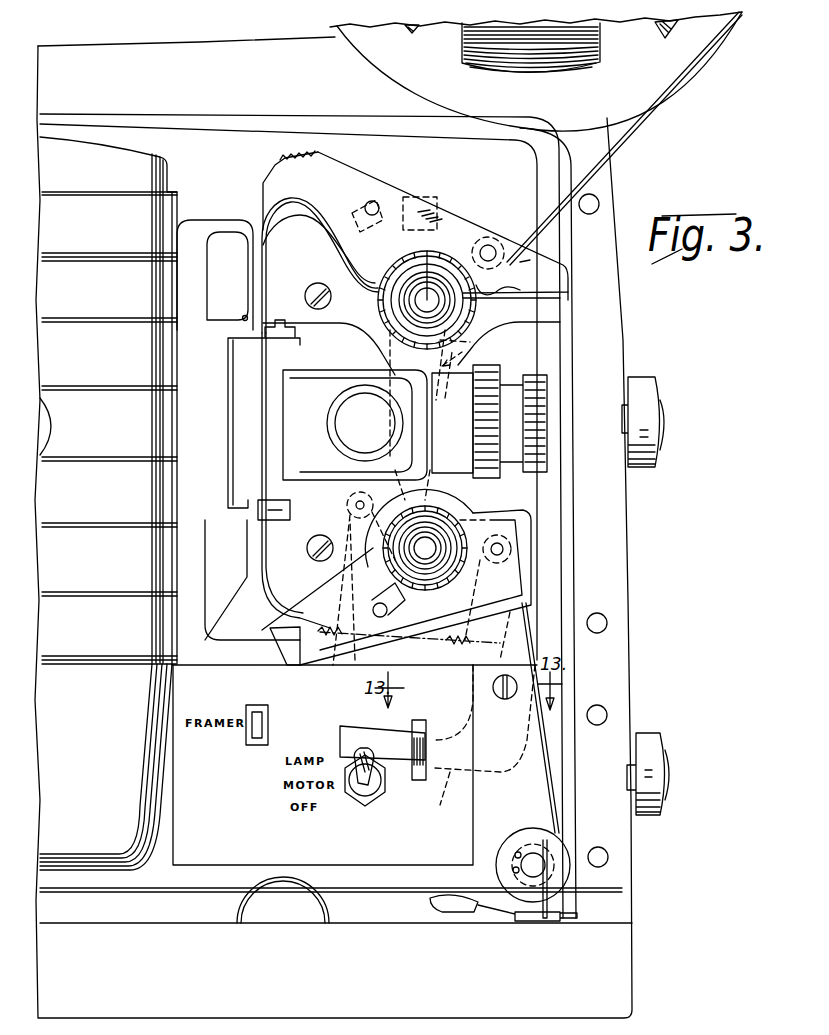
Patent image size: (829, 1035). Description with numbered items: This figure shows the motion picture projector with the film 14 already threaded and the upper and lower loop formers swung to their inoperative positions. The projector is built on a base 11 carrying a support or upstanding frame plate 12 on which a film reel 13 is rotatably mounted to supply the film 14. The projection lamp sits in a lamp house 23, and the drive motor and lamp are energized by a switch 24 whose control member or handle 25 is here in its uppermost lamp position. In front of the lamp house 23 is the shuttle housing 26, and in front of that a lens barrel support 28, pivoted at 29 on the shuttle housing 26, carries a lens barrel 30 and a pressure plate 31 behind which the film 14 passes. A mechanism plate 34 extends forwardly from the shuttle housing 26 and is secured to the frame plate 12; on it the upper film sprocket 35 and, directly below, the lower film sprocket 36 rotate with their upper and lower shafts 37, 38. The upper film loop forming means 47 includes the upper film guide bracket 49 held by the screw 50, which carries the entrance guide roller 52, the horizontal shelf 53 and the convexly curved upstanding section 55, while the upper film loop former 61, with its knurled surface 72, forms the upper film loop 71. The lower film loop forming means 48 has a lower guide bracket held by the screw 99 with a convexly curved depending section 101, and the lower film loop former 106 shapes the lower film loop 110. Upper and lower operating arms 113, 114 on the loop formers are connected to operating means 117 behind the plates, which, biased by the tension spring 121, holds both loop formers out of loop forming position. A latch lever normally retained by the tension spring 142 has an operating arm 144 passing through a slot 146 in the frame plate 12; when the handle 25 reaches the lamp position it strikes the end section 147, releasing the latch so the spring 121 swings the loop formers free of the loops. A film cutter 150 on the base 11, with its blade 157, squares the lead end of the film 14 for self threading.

The base 11 is at (618, 968).
The support or upstanding frame plate 12 is at (607, 325).
The film reel 13 is at (690, 55).
The film 14 is at (636, 128).
The lamp house 23 is at (103, 147).
The switch 24 is at (390, 800).
The control member or handle 25 is at (358, 788).
The shuttle housing 26 is at (222, 225).
The lens barrel support 28 is at (318, 418).
The pivot 29 is at (244, 314).
The lens barrel 30 is at (468, 430).
The pressure plate 31 is at (270, 326).
The mechanism plate 34 is at (483, 195).
The upper film sprocket 35 is at (463, 308).
The lower film sprocket 36 is at (426, 578).
The upper shaft 37 is at (424, 284).
The lower shaft 38 is at (428, 545).
The upper film loop forming means 47 is at (571, 287).
The lower film loop forming means 48 is at (540, 550).
The upper film guide bracket 49 is at (367, 342).
The screw 50 is at (312, 285).
The entrance guide roller 52 is at (488, 243).
The shelf 53 is at (536, 266).
The convexly curved upstanding section 55 is at (290, 236).
The upper film loop former 61 is at (357, 182).
The upper film loop 71 is at (262, 212).
The knurled surface 72 is at (280, 162).
The screw 99 is at (307, 549).
The convexly curved depending section 101 is at (288, 575).
The lower film loop former 106 is at (290, 662).
The lower film loop 110 is at (354, 592).
The upper operating arm 113 is at (375, 204).
The lower operating arm 114 is at (378, 642).
The operating means 117 is at (462, 352).
The tension spring 121 is at (442, 190).
The tension spring 142 is at (336, 607).
The operating arm 144 is at (453, 772).
The slot 146 is at (424, 726).
The end section 147 is at (350, 737).
The film cutter 150 is at (484, 896).
The blade 157 is at (428, 904).